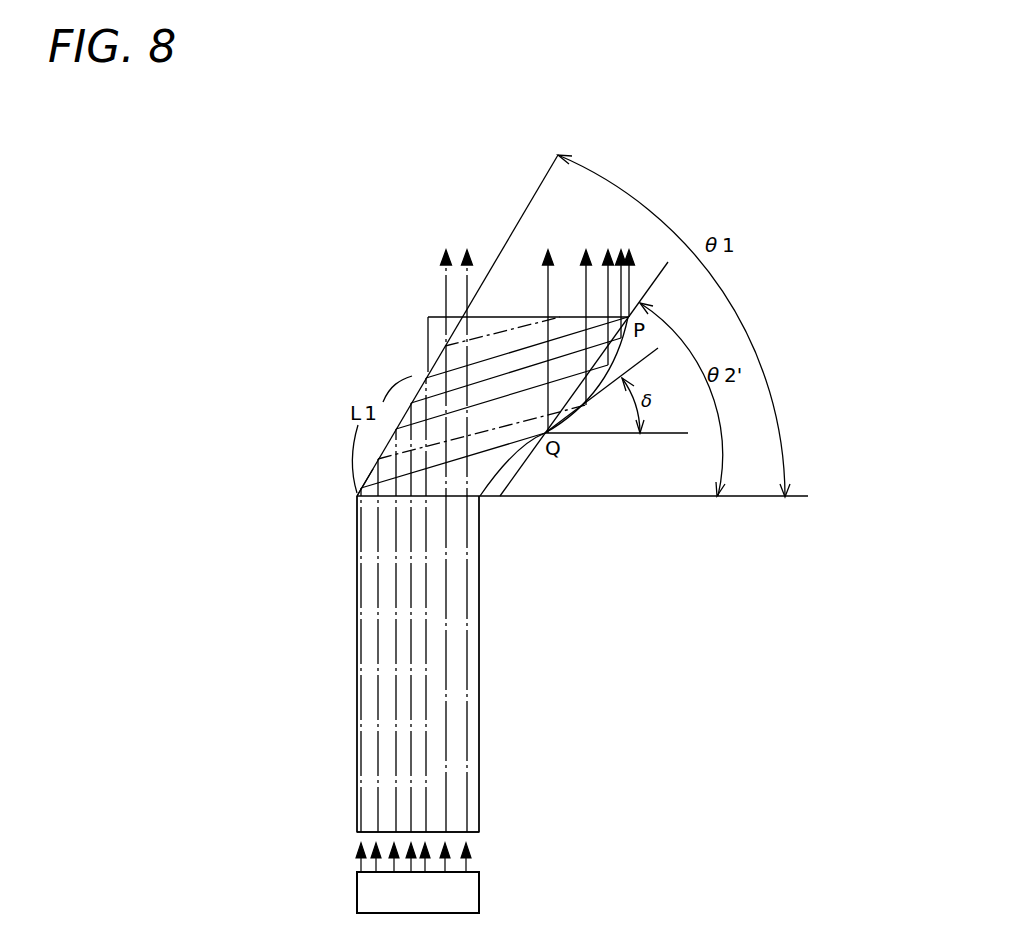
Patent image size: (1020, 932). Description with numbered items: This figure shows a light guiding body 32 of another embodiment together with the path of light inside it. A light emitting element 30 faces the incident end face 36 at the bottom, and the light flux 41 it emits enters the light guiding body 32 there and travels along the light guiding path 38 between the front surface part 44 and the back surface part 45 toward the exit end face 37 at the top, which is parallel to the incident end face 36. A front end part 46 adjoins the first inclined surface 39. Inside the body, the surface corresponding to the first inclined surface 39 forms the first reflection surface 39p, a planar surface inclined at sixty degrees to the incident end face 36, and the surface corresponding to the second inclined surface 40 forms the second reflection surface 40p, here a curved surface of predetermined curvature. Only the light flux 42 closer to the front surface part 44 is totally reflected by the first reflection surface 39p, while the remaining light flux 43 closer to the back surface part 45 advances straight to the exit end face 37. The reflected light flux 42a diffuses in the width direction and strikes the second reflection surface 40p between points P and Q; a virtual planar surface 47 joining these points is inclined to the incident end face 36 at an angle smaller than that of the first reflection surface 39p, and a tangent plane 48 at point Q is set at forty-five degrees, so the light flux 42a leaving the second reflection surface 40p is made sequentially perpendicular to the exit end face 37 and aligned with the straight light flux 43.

The light emitting element 30 is at (480, 893).
The light guiding body 32 is at (352, 655).
The incident end face 36 is at (473, 833).
The exit end face 37 is at (430, 316).
The light guiding path 38 is at (440, 627).
The first inclined surface 39 is at (420, 378).
The first reflection surface 39p is at (355, 497).
The second inclined surface 40 is at (513, 462).
The second reflection surface 40p is at (573, 412).
The light flux 41 is at (358, 867).
The light flux 42 is at (427, 717).
The reflected light flux 42a is at (505, 420).
The light flux 43 is at (447, 770).
The front surface part 44 is at (357, 573).
The back surface part 45 is at (480, 558).
The front end part 46 is at (426, 348).
The virtual planar surface 47 is at (660, 275).
The tangent plane 48 is at (645, 355).